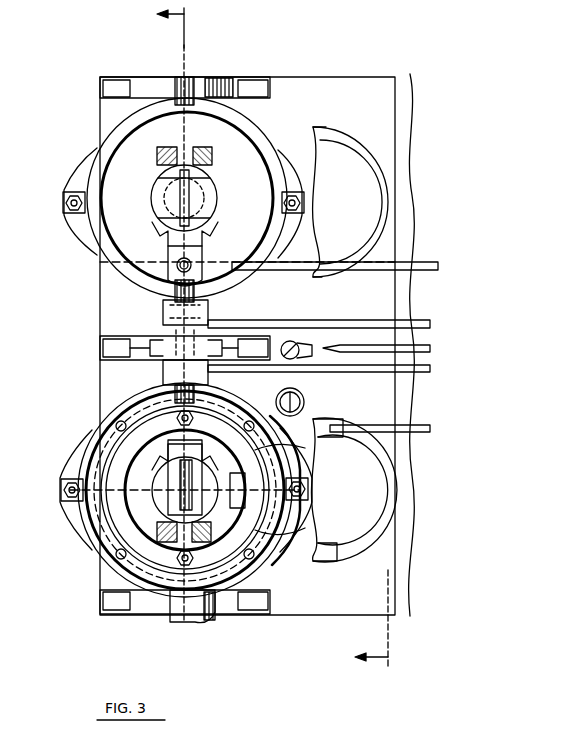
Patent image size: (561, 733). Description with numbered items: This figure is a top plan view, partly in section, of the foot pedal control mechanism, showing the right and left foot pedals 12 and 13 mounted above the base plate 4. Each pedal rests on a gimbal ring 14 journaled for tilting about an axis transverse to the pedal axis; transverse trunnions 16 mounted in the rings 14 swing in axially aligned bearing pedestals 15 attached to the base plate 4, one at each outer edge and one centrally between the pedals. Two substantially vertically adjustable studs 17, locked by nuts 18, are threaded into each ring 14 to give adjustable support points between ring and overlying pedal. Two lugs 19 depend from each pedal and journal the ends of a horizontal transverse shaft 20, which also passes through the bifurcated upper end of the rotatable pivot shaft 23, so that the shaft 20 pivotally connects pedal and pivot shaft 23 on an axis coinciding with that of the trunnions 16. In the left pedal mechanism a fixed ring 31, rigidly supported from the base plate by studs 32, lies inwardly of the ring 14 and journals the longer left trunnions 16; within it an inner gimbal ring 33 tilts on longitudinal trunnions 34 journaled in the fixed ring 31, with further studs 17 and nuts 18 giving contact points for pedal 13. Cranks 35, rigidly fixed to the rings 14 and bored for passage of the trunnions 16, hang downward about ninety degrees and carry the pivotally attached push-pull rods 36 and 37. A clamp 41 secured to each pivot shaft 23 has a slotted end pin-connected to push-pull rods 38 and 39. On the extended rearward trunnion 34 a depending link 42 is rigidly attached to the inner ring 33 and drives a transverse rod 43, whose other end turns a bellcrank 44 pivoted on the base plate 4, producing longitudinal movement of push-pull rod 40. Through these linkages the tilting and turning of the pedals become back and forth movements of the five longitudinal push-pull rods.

The base plate 4 is at (204, 24).
The foot pedal 12 is at (345, 160).
The foot pedal 13 is at (352, 528).
The gimbal ring 14 is at (126, 124).
The bearing pedestal 15 is at (147, 82).
The transverse trunnion 16 is at (190, 80).
The adjustable stud 17 is at (68, 215).
The nut 18 is at (72, 193).
The lug 19 is at (212, 155).
The transverse shaft 20 is at (186, 150).
The pivot shaft 23 is at (200, 183).
The fixed ring 31 is at (258, 548).
The stud 32 is at (92, 404).
The inner gimbal ring 33 is at (140, 512).
The longitudinal trunnion 34 is at (96, 510).
The crank 35 is at (230, 300).
The push-pull rod 36 is at (292, 320).
The push-pull rod 37 is at (348, 372).
The push-pull rod 38 is at (360, 268).
The push-pull rod 39 is at (418, 428).
The push-pull rod 40 is at (420, 345).
The clamp 41 is at (300, 470).
The link 42 is at (302, 526).
The transverse rod 43 is at (300, 446).
The bellcrank 44 is at (302, 392).